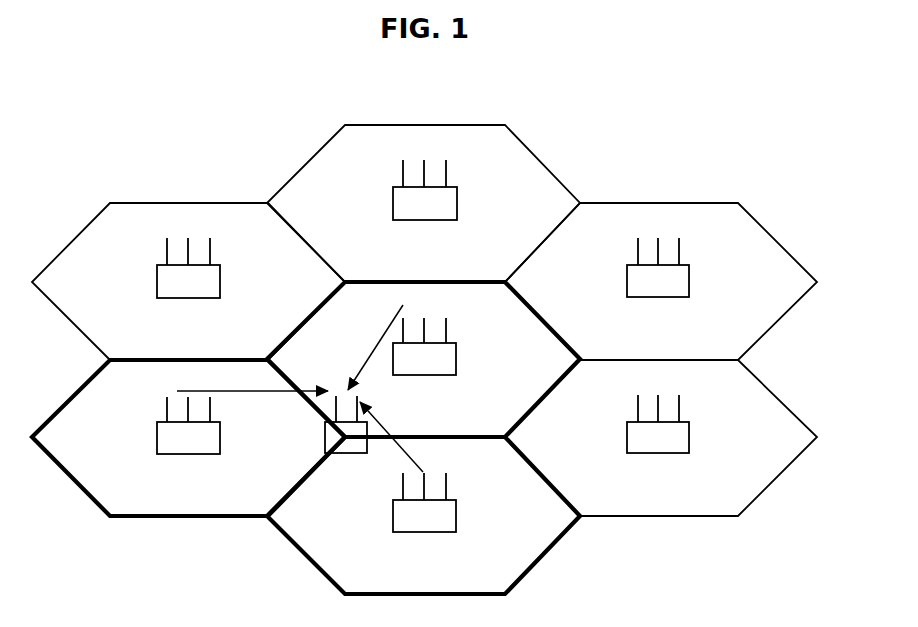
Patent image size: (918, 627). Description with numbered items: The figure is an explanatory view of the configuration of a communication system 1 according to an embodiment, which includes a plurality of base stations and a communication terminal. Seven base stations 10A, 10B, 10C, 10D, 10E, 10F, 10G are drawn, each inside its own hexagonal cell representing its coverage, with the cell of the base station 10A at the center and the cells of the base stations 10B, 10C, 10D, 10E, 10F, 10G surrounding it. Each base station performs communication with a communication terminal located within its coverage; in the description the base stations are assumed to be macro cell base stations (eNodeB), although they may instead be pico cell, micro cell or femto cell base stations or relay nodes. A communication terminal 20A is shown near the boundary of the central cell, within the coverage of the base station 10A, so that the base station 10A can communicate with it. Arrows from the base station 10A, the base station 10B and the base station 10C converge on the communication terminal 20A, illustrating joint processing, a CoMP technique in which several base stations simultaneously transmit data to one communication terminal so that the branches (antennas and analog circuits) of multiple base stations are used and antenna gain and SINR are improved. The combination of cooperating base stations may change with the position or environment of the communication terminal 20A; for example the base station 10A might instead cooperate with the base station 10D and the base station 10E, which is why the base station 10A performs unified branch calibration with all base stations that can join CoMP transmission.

The communication system 1 is at (186, 78).
The base station 10A is at (456, 359).
The base station 10B is at (220, 438).
The base station 10C is at (456, 516).
The base station 10D is at (689, 437).
The base station 10E is at (689, 281).
The base station 10F is at (457, 203).
The base station 10G is at (220, 281).
The communication terminal 20A is at (346, 453).